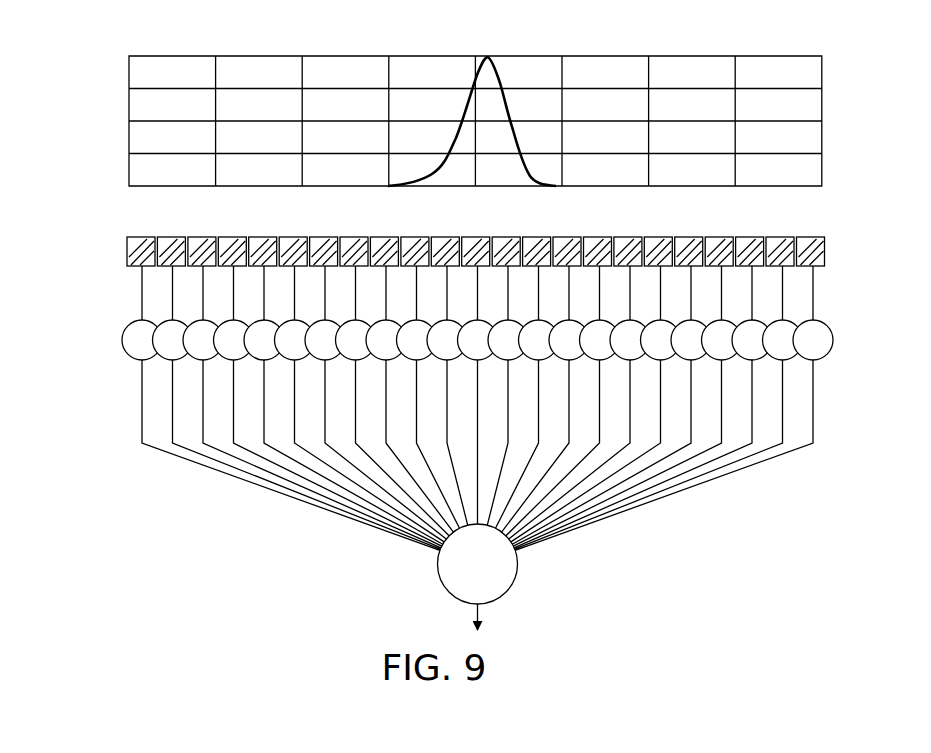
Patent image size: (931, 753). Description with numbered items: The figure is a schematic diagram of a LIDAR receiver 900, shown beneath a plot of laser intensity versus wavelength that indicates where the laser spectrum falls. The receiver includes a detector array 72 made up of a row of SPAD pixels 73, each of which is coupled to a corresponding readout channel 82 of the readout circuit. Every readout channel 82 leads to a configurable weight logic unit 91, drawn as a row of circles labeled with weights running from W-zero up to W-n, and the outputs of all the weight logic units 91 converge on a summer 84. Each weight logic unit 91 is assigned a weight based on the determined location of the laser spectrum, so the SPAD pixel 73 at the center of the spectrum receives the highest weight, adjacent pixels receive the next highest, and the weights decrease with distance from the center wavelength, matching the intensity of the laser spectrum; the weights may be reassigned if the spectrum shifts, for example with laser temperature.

The LIDAR receiver 900 is at (146, 46).
The detector array 72 is at (475, 319).
The SPAD pixel 73 is at (826, 252).
The readout channel 82 is at (127, 292).
The configurable weight logic unit 91 is at (117, 355).
The summer 84 is at (437, 568).